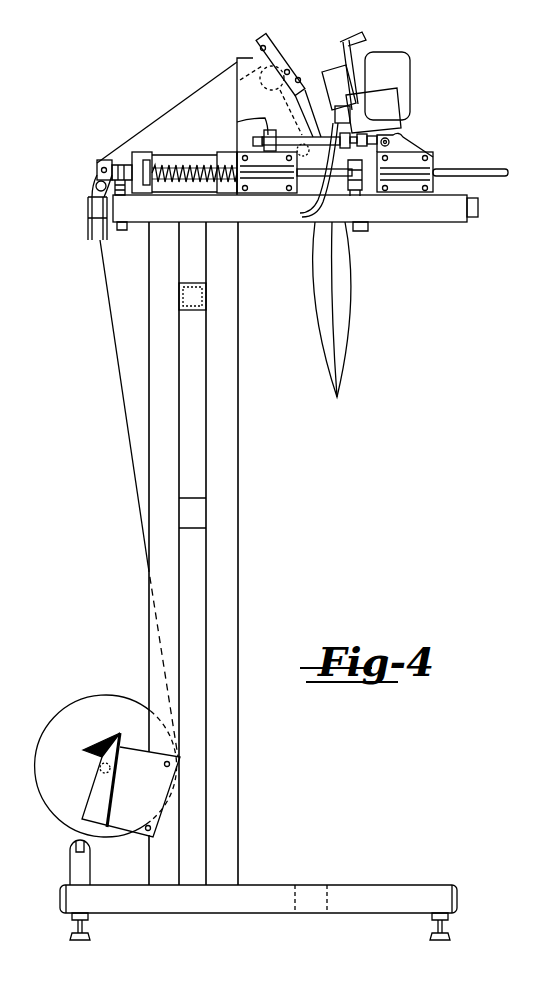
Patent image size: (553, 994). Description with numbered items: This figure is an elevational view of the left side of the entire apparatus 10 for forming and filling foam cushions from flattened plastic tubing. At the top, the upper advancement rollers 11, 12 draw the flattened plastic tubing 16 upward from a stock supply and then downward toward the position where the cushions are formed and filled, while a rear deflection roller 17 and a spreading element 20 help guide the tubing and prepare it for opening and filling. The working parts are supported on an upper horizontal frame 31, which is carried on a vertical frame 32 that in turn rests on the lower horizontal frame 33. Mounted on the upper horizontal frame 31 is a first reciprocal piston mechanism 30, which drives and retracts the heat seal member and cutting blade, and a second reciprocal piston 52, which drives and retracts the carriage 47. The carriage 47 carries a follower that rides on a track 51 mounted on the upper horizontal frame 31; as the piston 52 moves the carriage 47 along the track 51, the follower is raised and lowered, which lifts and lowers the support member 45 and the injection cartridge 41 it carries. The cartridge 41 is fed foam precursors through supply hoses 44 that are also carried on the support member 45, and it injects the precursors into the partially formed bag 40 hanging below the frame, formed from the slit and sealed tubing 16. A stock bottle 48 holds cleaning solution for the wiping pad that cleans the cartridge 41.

The apparatus 10 is at (545, 72).
The upper advancement roller 11 is at (293, 60).
The upper advancement roller 12 is at (240, 58).
The flattened plastic tubing 16 is at (118, 386).
The rear deflection roller 17 is at (94, 184).
The spreading element 20 is at (78, 227).
The first reciprocal piston mechanism 30 is at (177, 146).
The upper horizontal frame 31 is at (410, 214).
The vertical frame 32 is at (256, 581).
The lower horizontal frame 33 is at (407, 890).
The bag 40 is at (362, 326).
The injection cartridge 41 is at (300, 212).
The supply hoses 44 is at (368, 38).
The support member 45 is at (383, 108).
The carriage 47 is at (410, 148).
The stock bottle 48 is at (408, 68).
The track 51 is at (478, 202).
The second reciprocal piston 52 is at (258, 128).